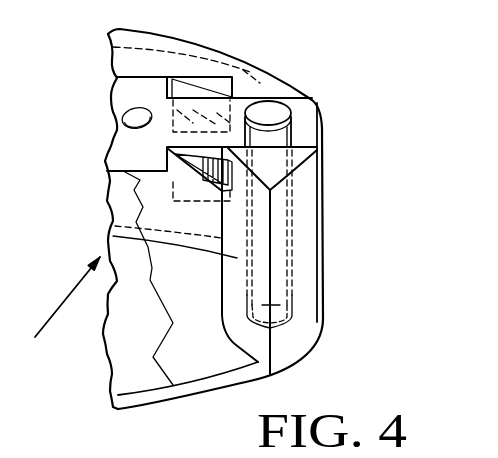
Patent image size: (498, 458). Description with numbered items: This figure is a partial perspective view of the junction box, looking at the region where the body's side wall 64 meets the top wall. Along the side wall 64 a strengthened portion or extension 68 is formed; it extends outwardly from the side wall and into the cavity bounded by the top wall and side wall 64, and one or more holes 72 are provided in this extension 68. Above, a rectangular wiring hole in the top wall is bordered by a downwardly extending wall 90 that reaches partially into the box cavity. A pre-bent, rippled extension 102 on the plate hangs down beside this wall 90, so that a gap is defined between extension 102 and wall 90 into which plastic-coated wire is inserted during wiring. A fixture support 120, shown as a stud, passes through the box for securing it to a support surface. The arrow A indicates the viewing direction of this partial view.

The side wall 64 is at (140, 383).
The extension 68 is at (240, 343).
The hole 72 is at (325, 272).
The downwardly extending wall 90 is at (325, 172).
The extension 102 is at (168, 77).
The fixture support 120 is at (325, 222).
The direction of rotation arrow A is at (53, 312).